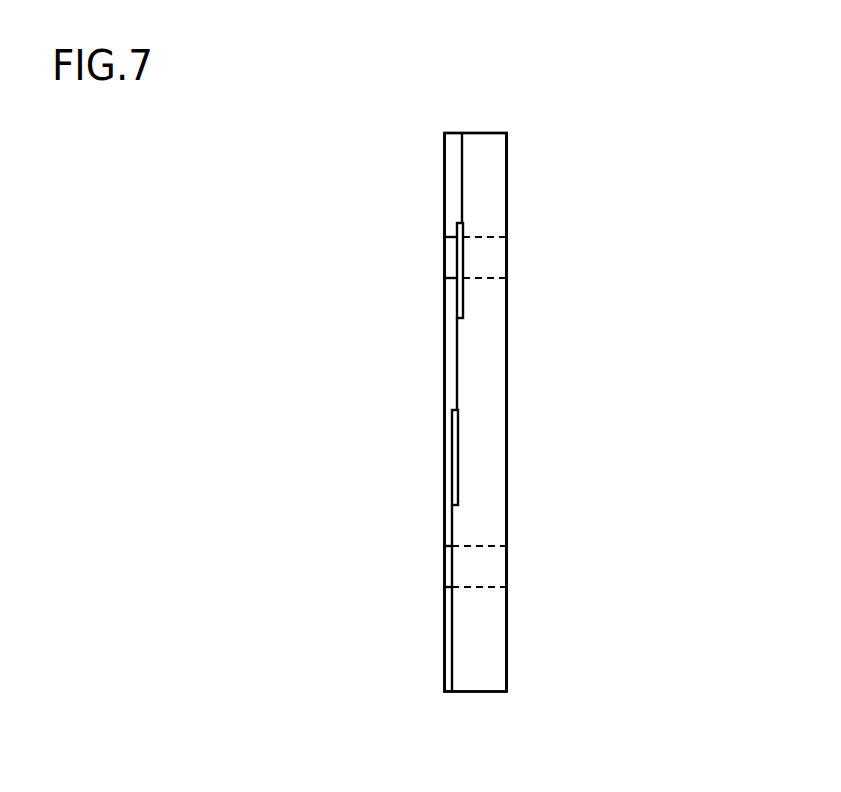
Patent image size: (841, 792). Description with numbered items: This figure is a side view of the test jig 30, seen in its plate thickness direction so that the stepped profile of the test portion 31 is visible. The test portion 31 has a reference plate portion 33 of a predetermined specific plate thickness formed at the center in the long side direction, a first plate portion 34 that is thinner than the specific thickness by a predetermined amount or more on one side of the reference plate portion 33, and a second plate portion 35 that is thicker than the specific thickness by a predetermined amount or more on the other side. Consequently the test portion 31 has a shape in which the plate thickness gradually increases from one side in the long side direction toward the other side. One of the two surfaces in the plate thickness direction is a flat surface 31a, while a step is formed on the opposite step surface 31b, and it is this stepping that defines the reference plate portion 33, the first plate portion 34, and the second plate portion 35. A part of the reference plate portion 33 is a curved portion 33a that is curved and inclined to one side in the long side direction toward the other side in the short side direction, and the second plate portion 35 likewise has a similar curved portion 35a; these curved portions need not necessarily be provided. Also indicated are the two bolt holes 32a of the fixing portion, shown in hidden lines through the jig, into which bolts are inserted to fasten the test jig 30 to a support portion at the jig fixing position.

The test jig 30 is at (327, 146).
The test portion 31 is at (458, 412).
The flat surface 31a is at (507, 322).
The step surface 31b is at (429, 352).
The bolt hole 32a is at (484, 237).
The reference plate portion 33 is at (457, 393).
The curved portion 33a is at (458, 257).
The first plate portion 34 is at (462, 176).
The second plate portion 35 is at (452, 613).
The curved portion 35a is at (452, 455).